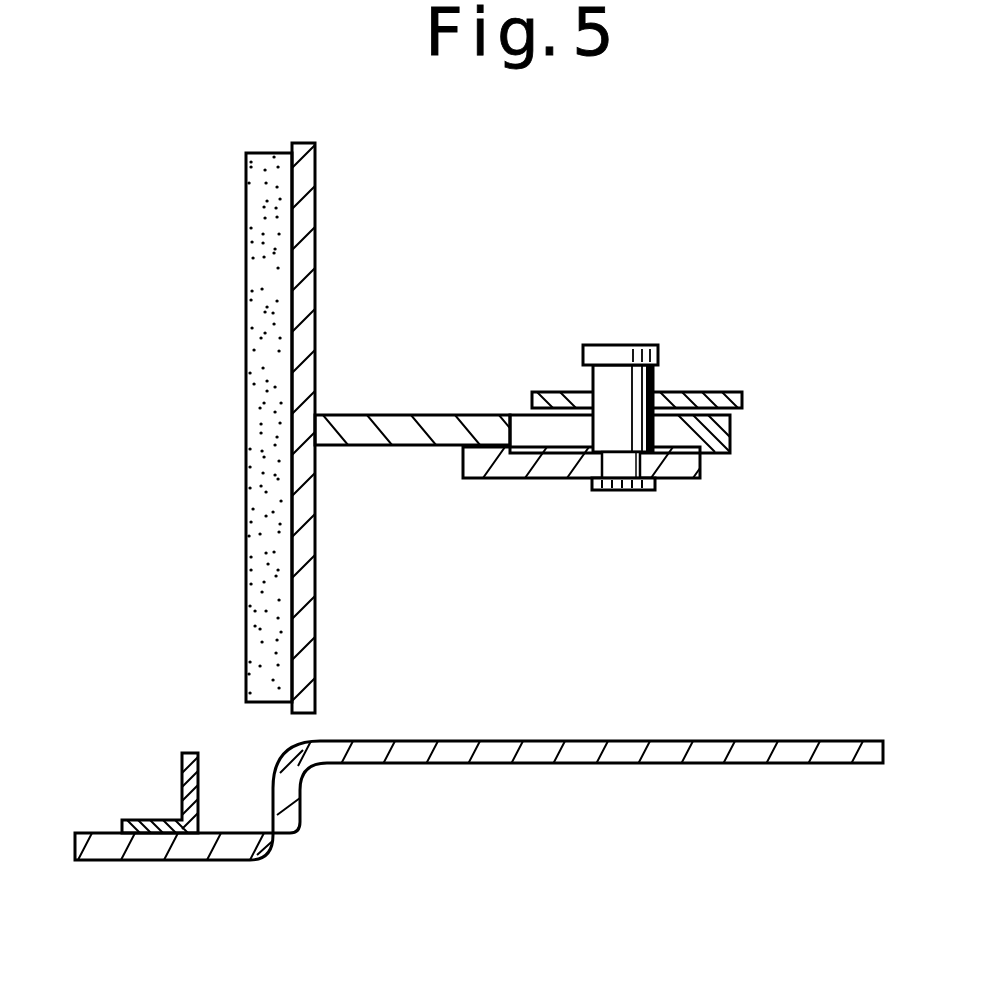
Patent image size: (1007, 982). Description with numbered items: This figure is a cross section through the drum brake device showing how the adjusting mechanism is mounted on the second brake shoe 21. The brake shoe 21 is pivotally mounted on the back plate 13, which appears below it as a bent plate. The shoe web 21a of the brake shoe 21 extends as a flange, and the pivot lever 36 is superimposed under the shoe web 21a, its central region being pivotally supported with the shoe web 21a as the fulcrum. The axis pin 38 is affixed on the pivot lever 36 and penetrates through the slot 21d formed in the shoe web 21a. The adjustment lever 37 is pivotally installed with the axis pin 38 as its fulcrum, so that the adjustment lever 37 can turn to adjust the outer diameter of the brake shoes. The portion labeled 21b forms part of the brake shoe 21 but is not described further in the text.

The back plate 13 is at (525, 780).
The brake shoe 21 is at (220, 368).
The shoe web 21a is at (393, 413).
The foam pad of panel 21b is at (254, 590).
The slot 21d is at (680, 440).
The pivot lever 36 is at (487, 478).
The adjustment lever 37 is at (742, 398).
The axis pin 38 is at (657, 375).